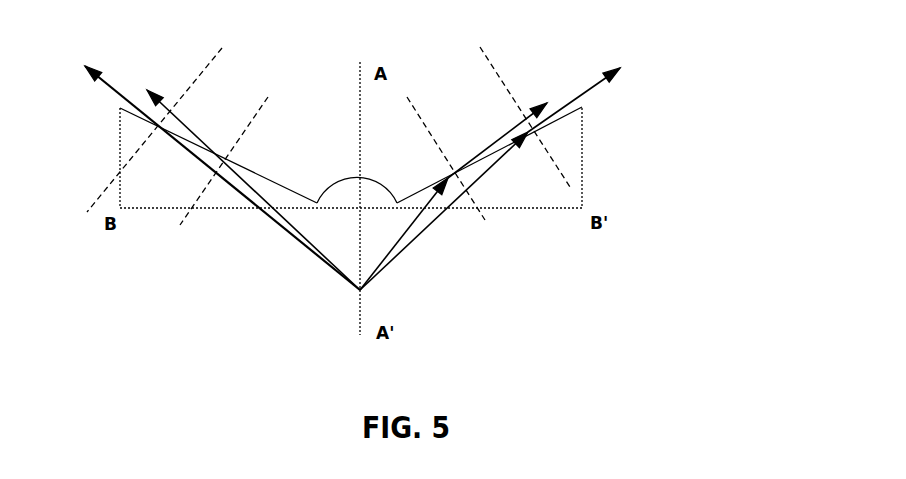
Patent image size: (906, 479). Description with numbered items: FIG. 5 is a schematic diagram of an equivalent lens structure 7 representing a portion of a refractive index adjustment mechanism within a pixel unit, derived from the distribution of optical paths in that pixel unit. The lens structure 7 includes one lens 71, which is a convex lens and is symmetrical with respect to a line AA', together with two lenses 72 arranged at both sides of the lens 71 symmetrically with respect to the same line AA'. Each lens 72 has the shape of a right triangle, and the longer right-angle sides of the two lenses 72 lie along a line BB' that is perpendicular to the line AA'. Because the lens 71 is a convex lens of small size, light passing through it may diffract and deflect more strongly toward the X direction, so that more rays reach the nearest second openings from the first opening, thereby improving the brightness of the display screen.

The lens structure 7 is at (416, 163).
The lens 71 is at (337, 198).
The lens 72 is at (567, 153).